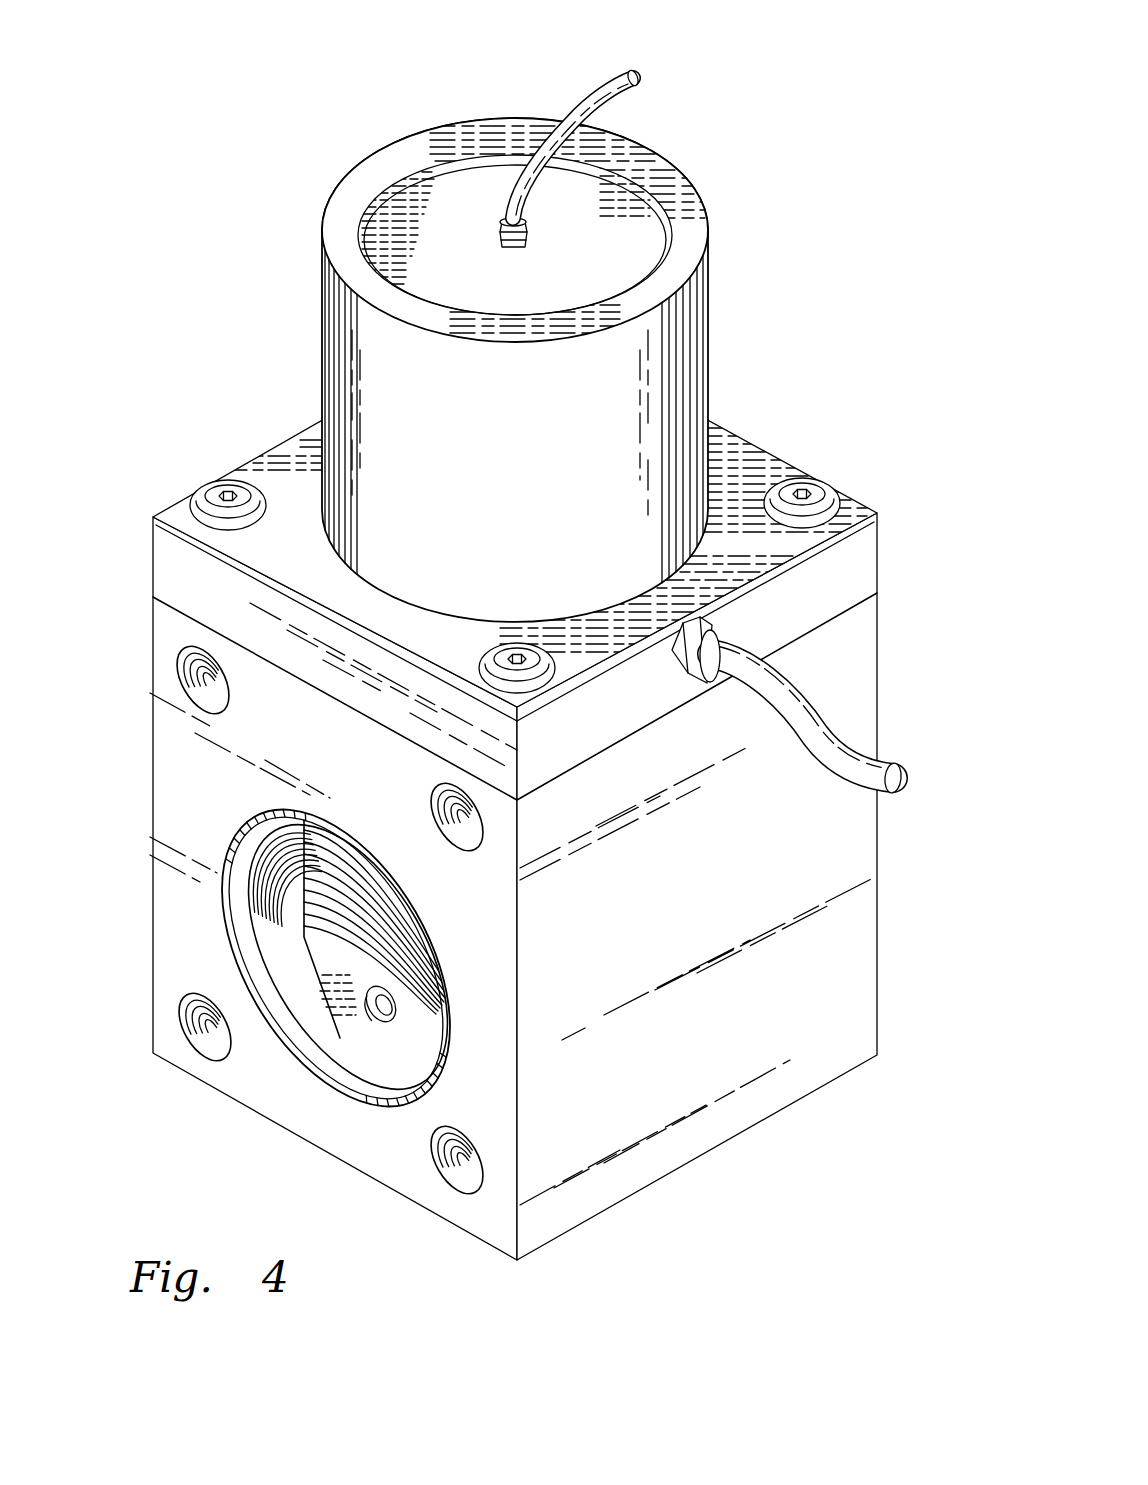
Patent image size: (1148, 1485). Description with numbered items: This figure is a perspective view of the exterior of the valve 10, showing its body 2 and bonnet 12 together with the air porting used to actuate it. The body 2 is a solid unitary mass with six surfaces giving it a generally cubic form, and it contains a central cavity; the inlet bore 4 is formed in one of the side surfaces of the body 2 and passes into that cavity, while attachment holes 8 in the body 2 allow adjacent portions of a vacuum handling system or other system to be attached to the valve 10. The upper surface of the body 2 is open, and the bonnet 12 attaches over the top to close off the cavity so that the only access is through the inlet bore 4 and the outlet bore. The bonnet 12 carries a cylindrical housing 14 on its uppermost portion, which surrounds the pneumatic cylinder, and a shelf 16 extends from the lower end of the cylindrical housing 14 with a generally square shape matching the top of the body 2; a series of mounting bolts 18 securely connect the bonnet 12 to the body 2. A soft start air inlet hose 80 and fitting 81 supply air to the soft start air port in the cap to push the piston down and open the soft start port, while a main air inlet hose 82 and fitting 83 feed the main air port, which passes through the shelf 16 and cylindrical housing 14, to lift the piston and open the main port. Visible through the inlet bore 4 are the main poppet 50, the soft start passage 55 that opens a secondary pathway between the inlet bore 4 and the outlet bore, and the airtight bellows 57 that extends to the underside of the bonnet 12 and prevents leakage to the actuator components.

The body 2 is at (868, 977).
The inlet bore 4 is at (277, 923).
The attachment holes 8 is at (182, 682).
The valve 10 is at (838, 224).
The bonnet 12 is at (318, 424).
The cylindrical housing 14 is at (535, 482).
The shelf 16 is at (270, 460).
The mounting bolts 18 is at (205, 500).
The main poppet 50 is at (417, 1033).
The soft start passage 55 is at (380, 1016).
The bellows 57 is at (343, 863).
The soft start air inlet hose 80 is at (577, 97).
The fitting 81 is at (527, 230).
The main air inlet hose 82 is at (890, 768).
The fitting 83 is at (683, 672).